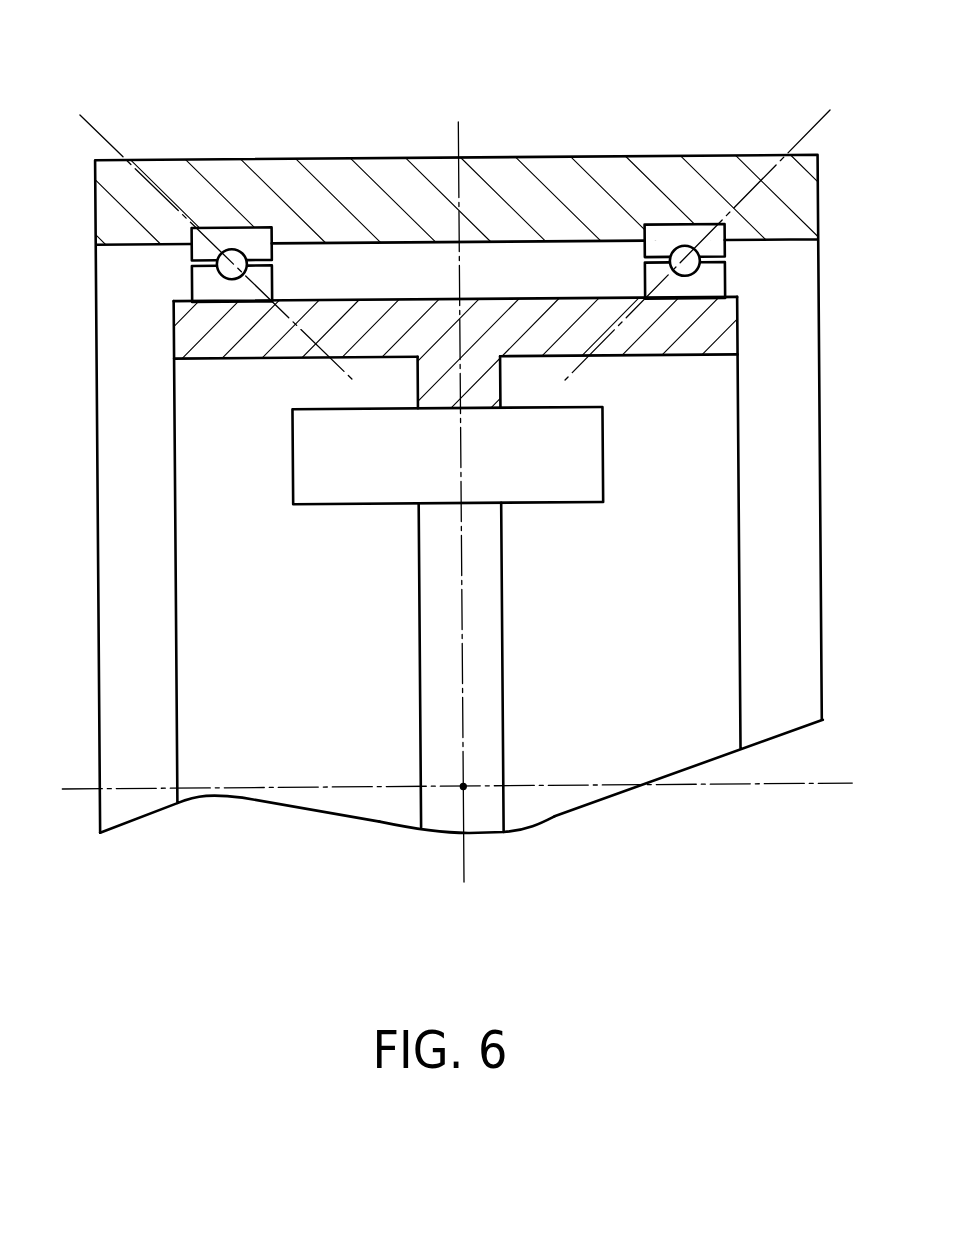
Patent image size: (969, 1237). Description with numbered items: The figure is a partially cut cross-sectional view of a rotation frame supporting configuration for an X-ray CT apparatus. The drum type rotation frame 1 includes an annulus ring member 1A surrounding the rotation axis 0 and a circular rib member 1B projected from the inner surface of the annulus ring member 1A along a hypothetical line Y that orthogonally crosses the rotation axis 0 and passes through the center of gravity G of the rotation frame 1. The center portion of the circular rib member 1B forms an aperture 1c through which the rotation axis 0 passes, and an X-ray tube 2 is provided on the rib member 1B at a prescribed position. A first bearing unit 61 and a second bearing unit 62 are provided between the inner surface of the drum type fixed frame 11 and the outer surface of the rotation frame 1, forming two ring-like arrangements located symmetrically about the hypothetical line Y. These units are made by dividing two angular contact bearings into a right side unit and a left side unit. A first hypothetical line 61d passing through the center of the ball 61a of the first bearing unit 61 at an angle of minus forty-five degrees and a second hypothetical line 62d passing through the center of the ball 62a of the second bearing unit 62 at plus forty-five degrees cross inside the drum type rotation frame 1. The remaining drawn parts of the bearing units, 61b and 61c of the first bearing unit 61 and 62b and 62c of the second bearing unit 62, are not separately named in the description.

The drum type rotation frame 1 is at (172, 751).
The annulus ring member 1A is at (428, 298).
The circular rib member 1B is at (500, 390).
The aperture 1c is at (450, 763).
The X-ray tube 2 is at (334, 506).
The drum type fixed frame 11 is at (98, 643).
The first bearing unit 61 is at (198, 237).
The ball 61a is at (192, 268).
The first bearing inner race 61b is at (210, 292).
The first bearing outer race 61c is at (267, 227).
The first hypothetical line 61d is at (88, 118).
The second bearing unit 62 is at (723, 240).
The second bearing ball 62a is at (690, 277).
The second bearing inner race 62b is at (676, 283).
The second bearing outer race 62c is at (646, 224).
The second hypothetical line 62d is at (830, 110).
The hypothetical line Y is at (459, 140).
The center of gravity G is at (466, 786).
The rotation axis 0 is at (468, 785).